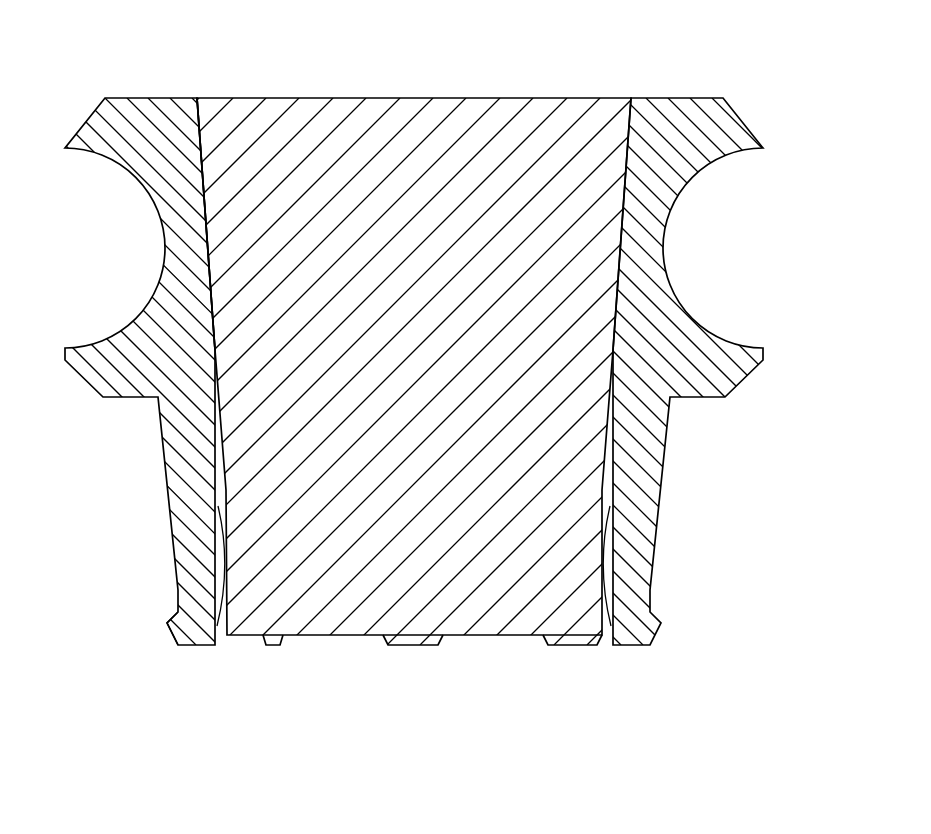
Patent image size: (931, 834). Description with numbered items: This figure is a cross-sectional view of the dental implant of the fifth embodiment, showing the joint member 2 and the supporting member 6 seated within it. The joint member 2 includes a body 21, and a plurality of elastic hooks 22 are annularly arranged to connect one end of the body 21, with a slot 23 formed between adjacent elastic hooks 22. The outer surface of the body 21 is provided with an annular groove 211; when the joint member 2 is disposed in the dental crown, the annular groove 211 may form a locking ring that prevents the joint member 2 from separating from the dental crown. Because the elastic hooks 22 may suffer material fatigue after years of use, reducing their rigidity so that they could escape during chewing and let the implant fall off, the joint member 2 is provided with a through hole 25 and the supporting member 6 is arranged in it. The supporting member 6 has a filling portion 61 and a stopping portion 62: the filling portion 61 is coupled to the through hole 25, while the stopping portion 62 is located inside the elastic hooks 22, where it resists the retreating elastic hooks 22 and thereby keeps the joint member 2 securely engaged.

The joint member 2 is at (755, 86).
The supporting member 6 is at (483, 96).
The body 21 is at (152, 108).
The annular groove 211 is at (668, 278).
The elastic hooks 22 is at (183, 627).
The slot 23 is at (225, 643).
The through hole 25 is at (271, 182).
The filling portion 61 is at (200, 147).
The stopping portion 62 is at (603, 555).